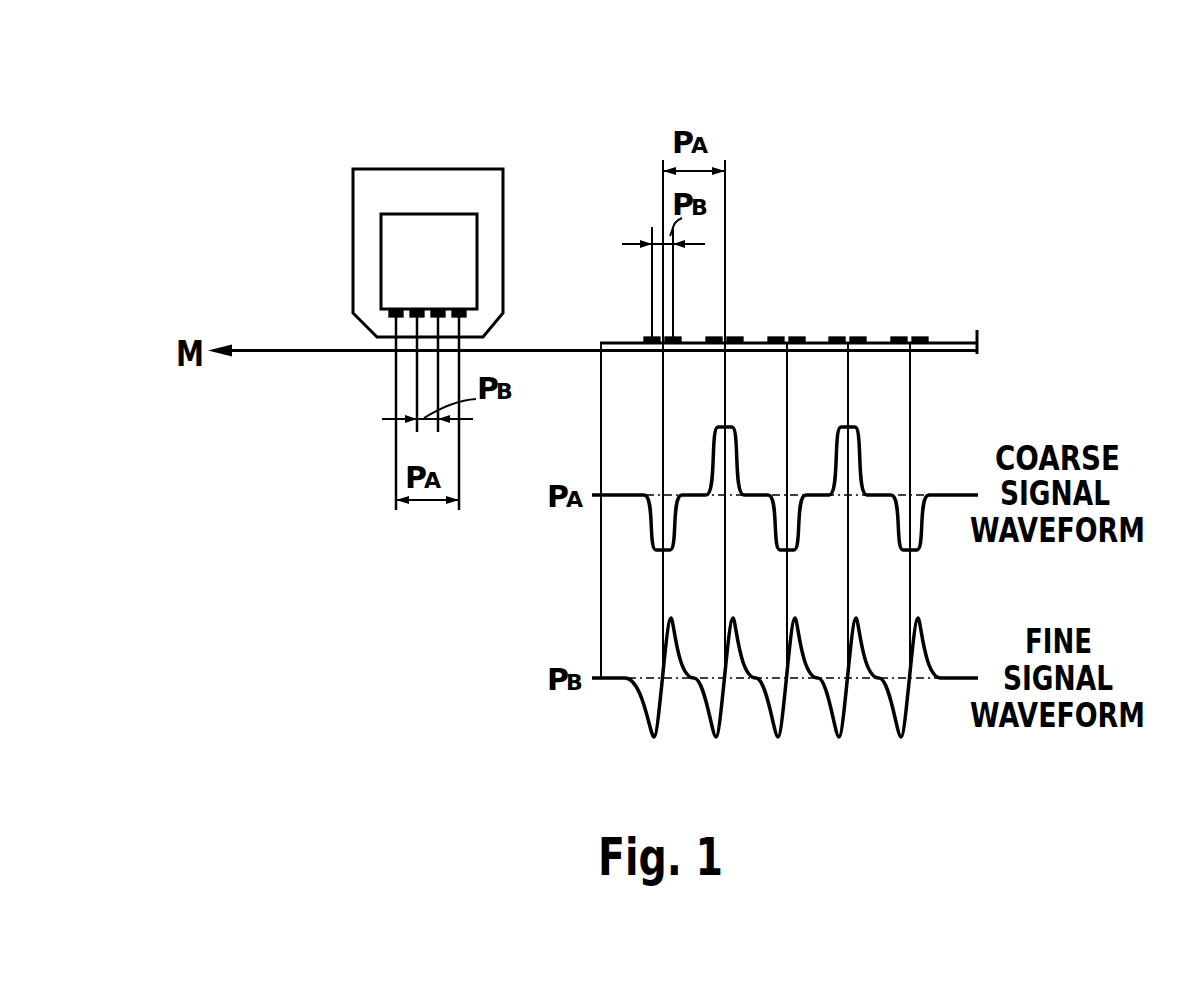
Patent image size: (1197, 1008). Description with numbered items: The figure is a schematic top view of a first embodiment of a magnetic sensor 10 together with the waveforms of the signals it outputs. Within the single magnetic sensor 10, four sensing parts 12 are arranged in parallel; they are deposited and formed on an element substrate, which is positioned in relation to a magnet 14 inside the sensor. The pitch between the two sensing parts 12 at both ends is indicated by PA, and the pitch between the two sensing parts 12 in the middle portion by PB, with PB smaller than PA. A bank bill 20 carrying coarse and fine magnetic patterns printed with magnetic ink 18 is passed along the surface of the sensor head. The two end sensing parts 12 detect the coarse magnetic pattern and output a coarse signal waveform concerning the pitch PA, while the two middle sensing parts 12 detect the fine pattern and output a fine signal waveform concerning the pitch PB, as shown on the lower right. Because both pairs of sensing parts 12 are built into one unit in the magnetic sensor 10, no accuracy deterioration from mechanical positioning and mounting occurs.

The magnetic sensor 10 is at (475, 169).
The sensing parts 12 is at (466, 316).
The magnet 14 is at (477, 263).
The magnetic ink 18 is at (893, 337).
The bank bill 20 is at (960, 337).